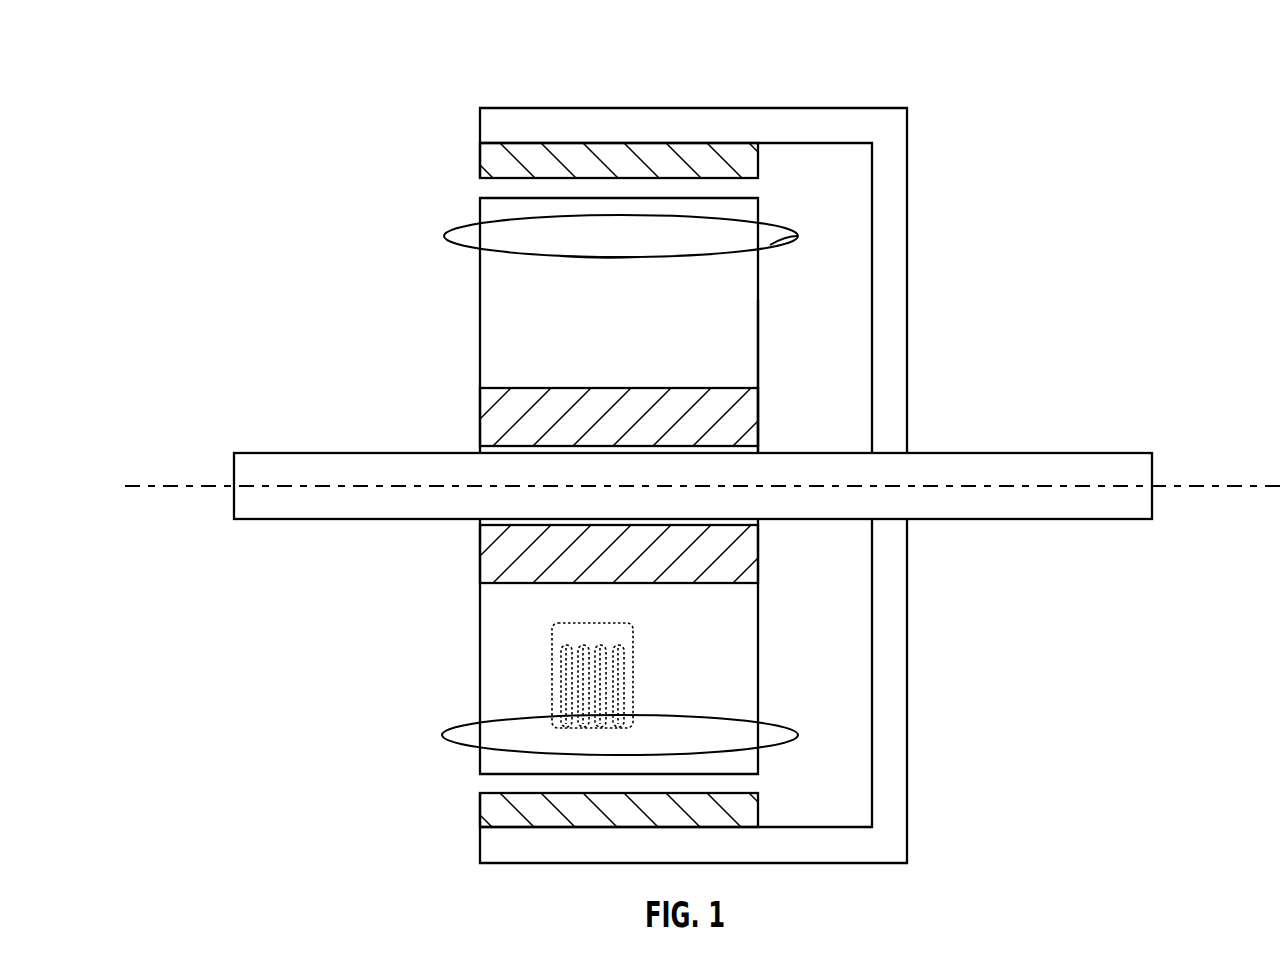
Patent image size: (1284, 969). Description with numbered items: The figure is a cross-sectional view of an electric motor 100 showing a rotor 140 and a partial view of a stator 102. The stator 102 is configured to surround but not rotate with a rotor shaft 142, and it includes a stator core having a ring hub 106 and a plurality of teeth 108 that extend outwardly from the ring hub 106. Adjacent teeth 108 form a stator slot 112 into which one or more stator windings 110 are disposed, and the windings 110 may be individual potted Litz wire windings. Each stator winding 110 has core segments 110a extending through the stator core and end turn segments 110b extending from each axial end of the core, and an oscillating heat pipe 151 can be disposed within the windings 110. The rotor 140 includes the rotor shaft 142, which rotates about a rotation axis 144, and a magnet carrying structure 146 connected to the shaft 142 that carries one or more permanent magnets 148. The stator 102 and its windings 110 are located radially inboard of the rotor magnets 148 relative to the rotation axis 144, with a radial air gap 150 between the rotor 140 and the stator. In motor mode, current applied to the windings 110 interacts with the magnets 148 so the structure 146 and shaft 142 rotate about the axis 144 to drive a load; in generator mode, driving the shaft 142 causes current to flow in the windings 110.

The electric motor 100 is at (327, 40).
The stator 102 is at (402, 314).
The ring hub 106 is at (480, 415).
The teeth 108 is at (480, 205).
The stator windings 110 is at (446, 234).
The core segments 110a is at (568, 266).
The end turn segments 110b is at (784, 258).
The stator slot 112 is at (748, 369).
The rotor 140 is at (983, 320).
The rotor shaft 142 is at (1051, 519).
The rotation axis 144 is at (1237, 486).
The magnet carrying structure 146 is at (908, 198).
The permanent magnets 148 is at (480, 158).
The radial air gap 150 is at (485, 783).
The oscillating heat pipe 151 is at (552, 680).